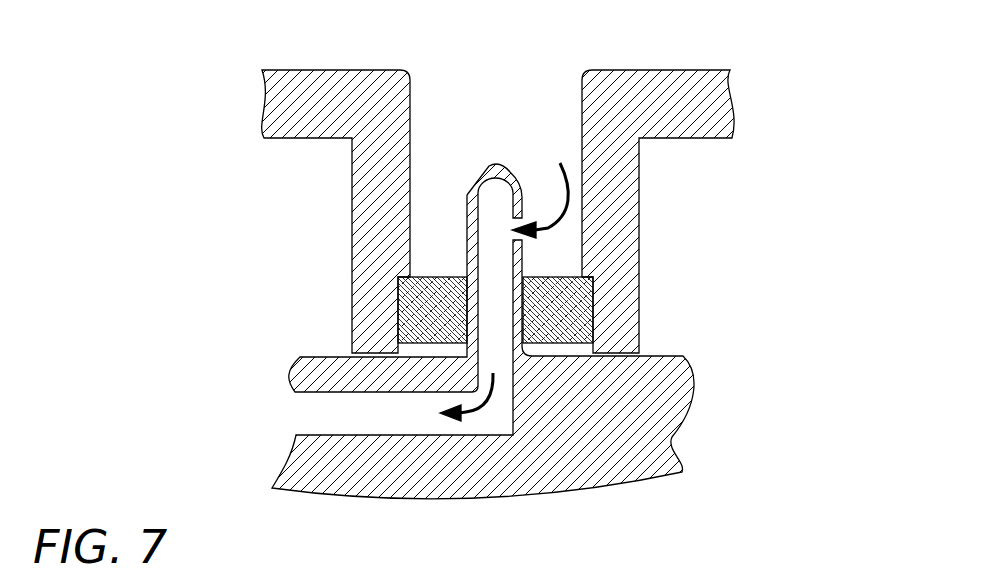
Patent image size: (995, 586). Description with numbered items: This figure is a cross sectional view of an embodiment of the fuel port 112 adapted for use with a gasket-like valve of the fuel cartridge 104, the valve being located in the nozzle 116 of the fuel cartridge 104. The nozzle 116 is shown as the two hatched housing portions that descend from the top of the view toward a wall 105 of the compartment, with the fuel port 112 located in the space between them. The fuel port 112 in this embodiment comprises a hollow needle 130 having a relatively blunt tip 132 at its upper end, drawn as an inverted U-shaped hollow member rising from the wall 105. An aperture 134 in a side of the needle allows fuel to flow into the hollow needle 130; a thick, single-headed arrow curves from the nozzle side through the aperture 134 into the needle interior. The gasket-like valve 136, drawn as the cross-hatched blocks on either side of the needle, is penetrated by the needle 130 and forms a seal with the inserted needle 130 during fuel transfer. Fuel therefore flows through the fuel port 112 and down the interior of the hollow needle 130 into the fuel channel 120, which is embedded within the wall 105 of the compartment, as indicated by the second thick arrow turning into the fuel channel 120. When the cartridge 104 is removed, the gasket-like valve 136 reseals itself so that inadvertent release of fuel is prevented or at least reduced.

The fuel cartridge 104 is at (522, 188).
The wall 105 is at (663, 425).
The fuel port 112 is at (482, 112).
The nozzle 116 is at (639, 233).
The fuel channel 120 is at (300, 412).
The hollow needle 130 is at (384, 269).
The blunt tip 132 is at (497, 165).
The aperture 134 is at (517, 222).
The gasket-like valve 136 is at (573, 313).